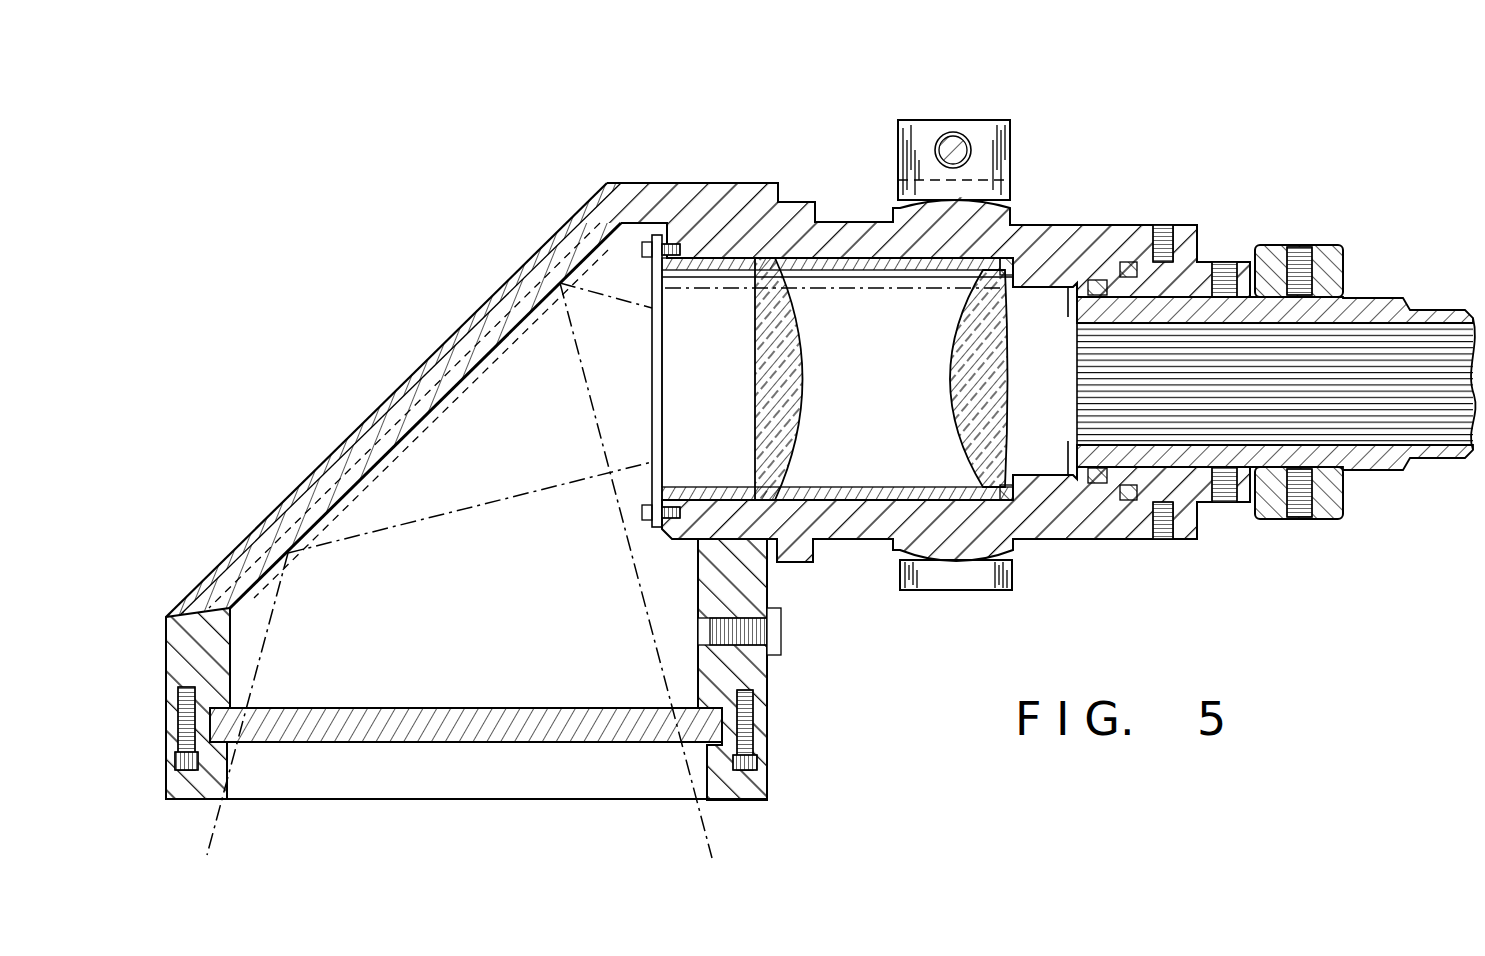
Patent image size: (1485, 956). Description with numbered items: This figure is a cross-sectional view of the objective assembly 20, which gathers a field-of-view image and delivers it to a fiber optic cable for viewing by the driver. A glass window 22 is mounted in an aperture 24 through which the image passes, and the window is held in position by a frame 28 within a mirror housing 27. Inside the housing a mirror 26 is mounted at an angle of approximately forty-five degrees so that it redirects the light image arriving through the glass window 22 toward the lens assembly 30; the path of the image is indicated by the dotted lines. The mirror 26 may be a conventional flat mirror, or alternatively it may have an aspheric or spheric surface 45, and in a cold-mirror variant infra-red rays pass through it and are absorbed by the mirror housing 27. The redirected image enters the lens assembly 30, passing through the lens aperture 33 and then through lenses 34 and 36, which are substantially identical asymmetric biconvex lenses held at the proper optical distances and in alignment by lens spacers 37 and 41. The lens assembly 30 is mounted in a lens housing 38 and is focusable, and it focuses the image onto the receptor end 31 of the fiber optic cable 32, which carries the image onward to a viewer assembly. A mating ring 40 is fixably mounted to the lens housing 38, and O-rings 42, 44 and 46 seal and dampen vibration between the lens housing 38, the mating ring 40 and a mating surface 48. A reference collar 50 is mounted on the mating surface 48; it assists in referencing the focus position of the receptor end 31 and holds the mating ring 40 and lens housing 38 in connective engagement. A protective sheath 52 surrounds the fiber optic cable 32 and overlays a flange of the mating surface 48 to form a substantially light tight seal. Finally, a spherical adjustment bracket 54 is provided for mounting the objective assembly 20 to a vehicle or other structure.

The objective assembly 20 is at (470, 124).
The glass window 22 is at (407, 730).
The aperture 24 is at (466, 778).
The mirror 26 is at (385, 403).
The mirror housing 27 is at (433, 352).
The frame 28 is at (767, 736).
The lens assembly 30 is at (1030, 60).
The receptor end 31 is at (1077, 357).
The fiber optic cable 32 is at (1457, 437).
The lens aperture 33 is at (652, 318).
The lens 34 is at (757, 357).
The lens 36 is at (960, 367).
The lens spacer 37 is at (687, 488).
The lens housing 38 is at (833, 210).
The mating ring 40 is at (1193, 539).
The lens spacer 41 is at (857, 487).
The O-ring 42 is at (1005, 262).
The O-ring 44 is at (1097, 280).
The aspheric or spheric surface 45 is at (390, 465).
The O-ring 46 is at (1130, 262).
The mating surface 48 is at (1183, 262).
The reference collar 50 is at (1340, 248).
The protective sheath 52 is at (1420, 298).
The spherical adjustment bracket 54 is at (1010, 133).